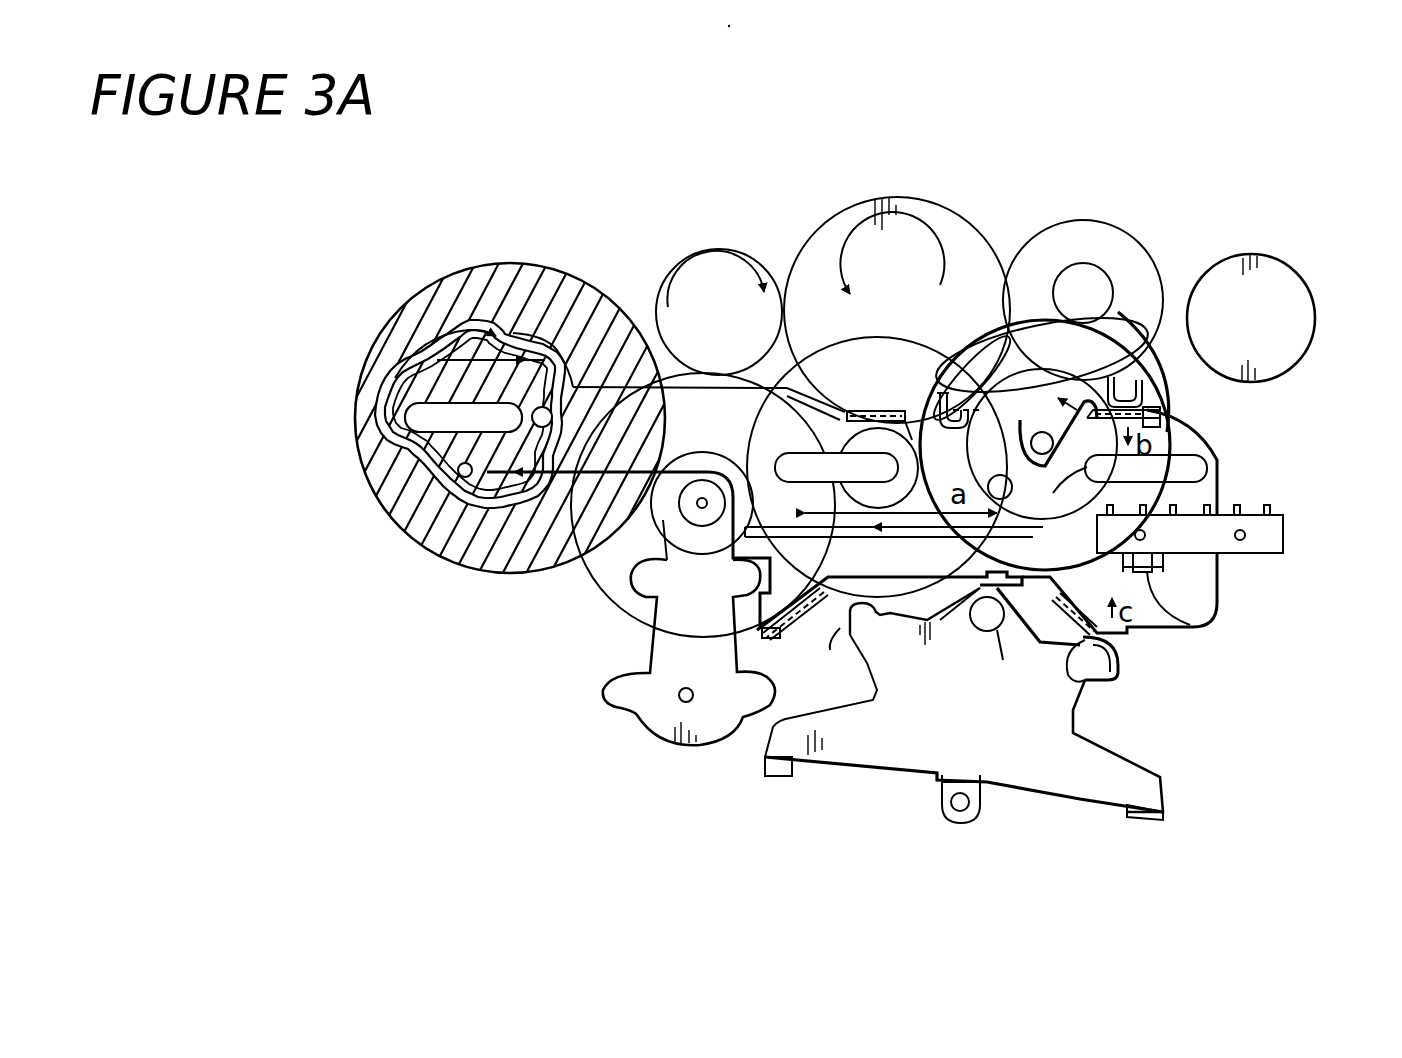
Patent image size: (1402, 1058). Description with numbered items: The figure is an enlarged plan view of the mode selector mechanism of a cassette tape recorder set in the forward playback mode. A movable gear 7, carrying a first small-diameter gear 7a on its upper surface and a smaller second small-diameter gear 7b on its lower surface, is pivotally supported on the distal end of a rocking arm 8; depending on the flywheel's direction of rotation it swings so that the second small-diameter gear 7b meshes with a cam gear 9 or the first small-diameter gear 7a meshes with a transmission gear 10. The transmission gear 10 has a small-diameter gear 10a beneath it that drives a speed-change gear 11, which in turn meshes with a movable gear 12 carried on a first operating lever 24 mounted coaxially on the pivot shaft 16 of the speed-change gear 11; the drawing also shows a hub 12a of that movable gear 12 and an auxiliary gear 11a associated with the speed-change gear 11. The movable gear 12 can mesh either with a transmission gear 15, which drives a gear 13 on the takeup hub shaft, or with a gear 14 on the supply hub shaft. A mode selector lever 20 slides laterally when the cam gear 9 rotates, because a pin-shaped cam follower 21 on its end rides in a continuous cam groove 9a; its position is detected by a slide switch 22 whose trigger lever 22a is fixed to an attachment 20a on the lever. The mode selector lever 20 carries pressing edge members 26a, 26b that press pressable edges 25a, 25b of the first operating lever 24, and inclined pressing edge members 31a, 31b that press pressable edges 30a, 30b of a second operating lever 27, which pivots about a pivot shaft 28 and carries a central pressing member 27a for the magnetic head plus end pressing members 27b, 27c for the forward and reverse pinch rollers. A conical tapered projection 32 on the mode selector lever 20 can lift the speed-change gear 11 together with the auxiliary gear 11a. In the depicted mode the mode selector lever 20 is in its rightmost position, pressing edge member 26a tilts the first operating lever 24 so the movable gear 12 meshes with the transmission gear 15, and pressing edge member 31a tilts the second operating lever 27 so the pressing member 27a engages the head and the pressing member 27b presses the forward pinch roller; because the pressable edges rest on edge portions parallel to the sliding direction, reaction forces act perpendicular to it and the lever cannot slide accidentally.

The movable gear 7 is at (625, 608).
The first small-diameter gear 7a is at (660, 535).
The second small-diameter gear 7b is at (683, 512).
The rocking arm 8 is at (660, 730).
The cam gear 9 is at (437, 312).
The cam groove 9a is at (385, 385).
The transmission gear 10 is at (878, 353).
The small-diameter gear 10a is at (765, 293).
The speed-change gear 11 is at (1102, 322).
The auxiliary gear 11a is at (1100, 400).
The movable gear 12 is at (1120, 237).
The gear hub 12a is at (1117, 390).
The gear 13 is at (681, 270).
The gear 14 is at (1296, 318).
The transmission gear 15 is at (933, 217).
The pivot shaft 16 is at (1062, 393).
The mode selector lever 20 is at (1210, 478).
The attachment 20a is at (1152, 560).
The cam follower 21 is at (533, 425).
The slide switch 22 is at (1285, 547).
The trigger lever 22a is at (1190, 625).
The first operating lever 24 is at (1038, 430).
The pressable edge 25a is at (1150, 388).
The pressable edge 25b is at (1007, 363).
The pressing edge member 26a is at (1160, 415).
The pressing edge member 26b is at (845, 410).
The second operating lever 27 is at (885, 762).
The pressing member 27a is at (960, 812).
The pressing member 27b is at (775, 776).
The pressing member 27c is at (1153, 815).
The pivot shaft 28 is at (990, 632).
The pressable edge 30a is at (1120, 660).
The pressable edge 30b is at (850, 635).
The inclined pressing edge member 31a is at (1105, 690).
The inclined pressing edge member 31b is at (780, 640).
The tapered projection 32 is at (1033, 480).